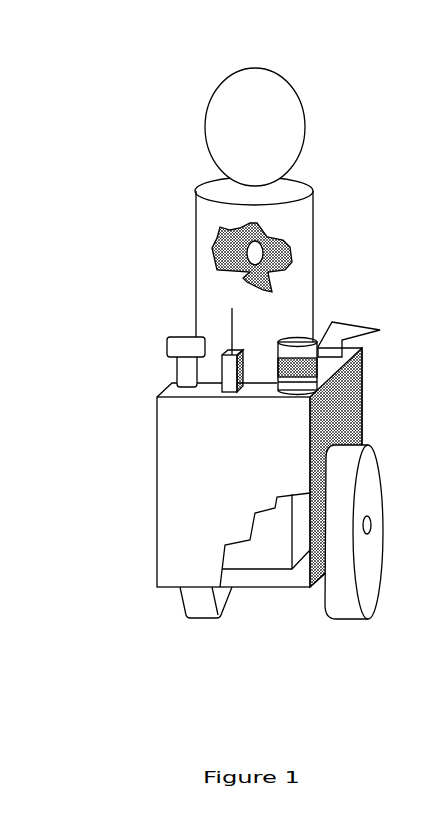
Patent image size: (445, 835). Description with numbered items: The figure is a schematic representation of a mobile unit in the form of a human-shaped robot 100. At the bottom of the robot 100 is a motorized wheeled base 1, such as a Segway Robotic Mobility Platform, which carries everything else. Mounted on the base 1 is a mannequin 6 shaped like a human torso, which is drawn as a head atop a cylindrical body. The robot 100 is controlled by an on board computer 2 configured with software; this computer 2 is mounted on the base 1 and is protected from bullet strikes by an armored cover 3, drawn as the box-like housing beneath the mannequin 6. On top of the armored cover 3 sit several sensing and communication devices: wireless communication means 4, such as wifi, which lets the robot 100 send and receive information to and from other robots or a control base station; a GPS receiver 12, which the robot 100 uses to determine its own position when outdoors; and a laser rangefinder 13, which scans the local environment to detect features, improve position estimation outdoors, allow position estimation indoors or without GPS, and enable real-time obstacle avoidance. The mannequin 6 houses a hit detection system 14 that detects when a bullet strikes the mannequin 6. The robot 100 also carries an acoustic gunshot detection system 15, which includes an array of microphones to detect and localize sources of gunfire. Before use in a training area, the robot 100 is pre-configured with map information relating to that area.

The human-shaped robot 100 is at (165, 110).
The mannequin 6 is at (196, 280).
The hit detection system 14 is at (278, 253).
The wireless communication means 4 is at (231, 333).
The GPS receiver 12 is at (173, 367).
The laser rangefinder 13 is at (362, 377).
The acoustic gunshot detection system 15 is at (345, 324).
The armored cover 3 is at (187, 493).
The on board computer 2 is at (253, 549).
The motorized wheeled base 1 is at (283, 588).